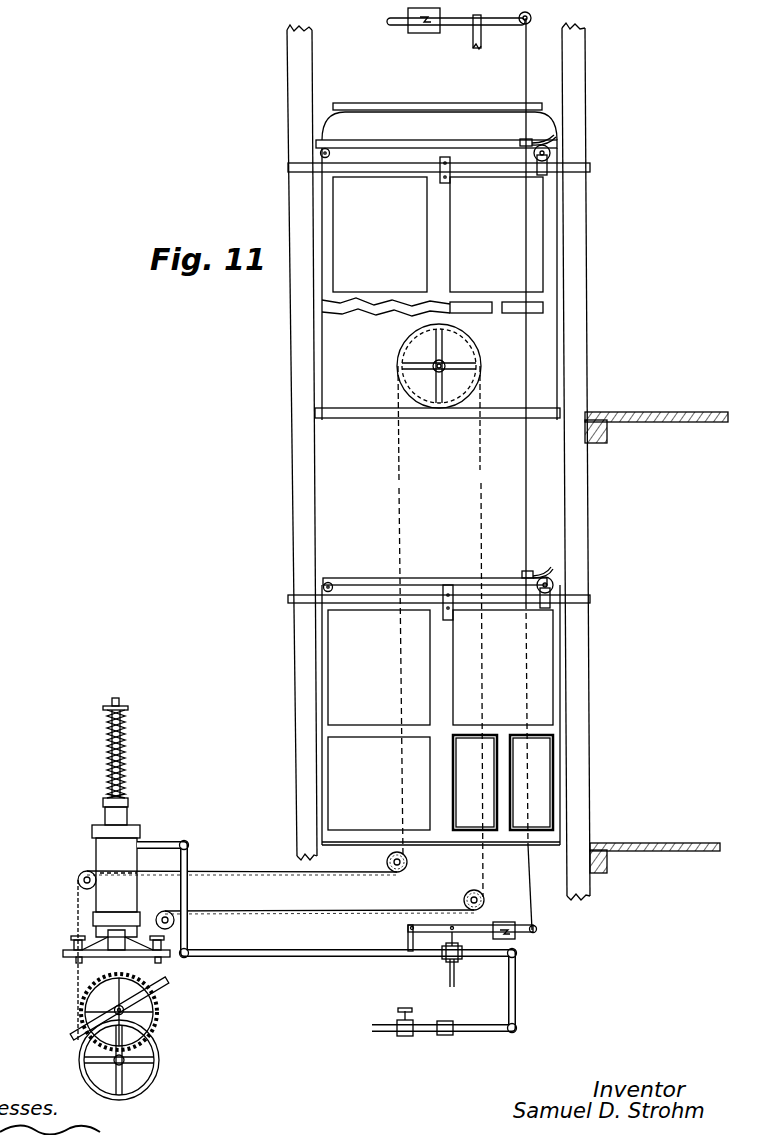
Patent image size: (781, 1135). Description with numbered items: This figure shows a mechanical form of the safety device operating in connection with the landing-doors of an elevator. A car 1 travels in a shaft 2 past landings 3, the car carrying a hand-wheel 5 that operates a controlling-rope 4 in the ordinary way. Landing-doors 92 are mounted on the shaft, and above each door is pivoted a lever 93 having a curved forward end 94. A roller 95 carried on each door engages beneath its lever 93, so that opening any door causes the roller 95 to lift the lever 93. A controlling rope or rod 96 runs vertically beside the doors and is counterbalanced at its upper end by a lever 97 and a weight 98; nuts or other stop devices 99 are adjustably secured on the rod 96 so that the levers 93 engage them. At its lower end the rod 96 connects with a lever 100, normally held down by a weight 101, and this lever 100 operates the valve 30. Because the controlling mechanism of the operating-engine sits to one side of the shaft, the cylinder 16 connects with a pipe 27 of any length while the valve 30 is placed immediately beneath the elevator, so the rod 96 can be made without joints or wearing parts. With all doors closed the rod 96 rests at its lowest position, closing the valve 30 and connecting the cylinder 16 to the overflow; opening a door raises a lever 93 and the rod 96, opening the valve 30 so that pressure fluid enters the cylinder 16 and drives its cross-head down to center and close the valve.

The elevator car 1 is at (437, 98).
The shaft 2 is at (438, 461).
The landing 3 is at (656, 630).
The controlling-rope 4 is at (399, 509).
The hand-wheel 5 is at (481, 386).
The cylinder 16 is at (103, 850).
The pipe 27 is at (188, 891).
The valve 30 is at (446, 960).
The landing-door 92 is at (558, 262).
The lever 93 is at (430, 147).
The curved forward end 94 is at (556, 137).
The roller 95 is at (550, 153).
The controlling rope or rod 96 is at (526, 514).
The lever 97 is at (509, 22).
The weight 98 is at (427, 30).
The nuts or stop devices 99 is at (520, 141).
The lever 100 is at (535, 933).
The weight 101 is at (504, 923).